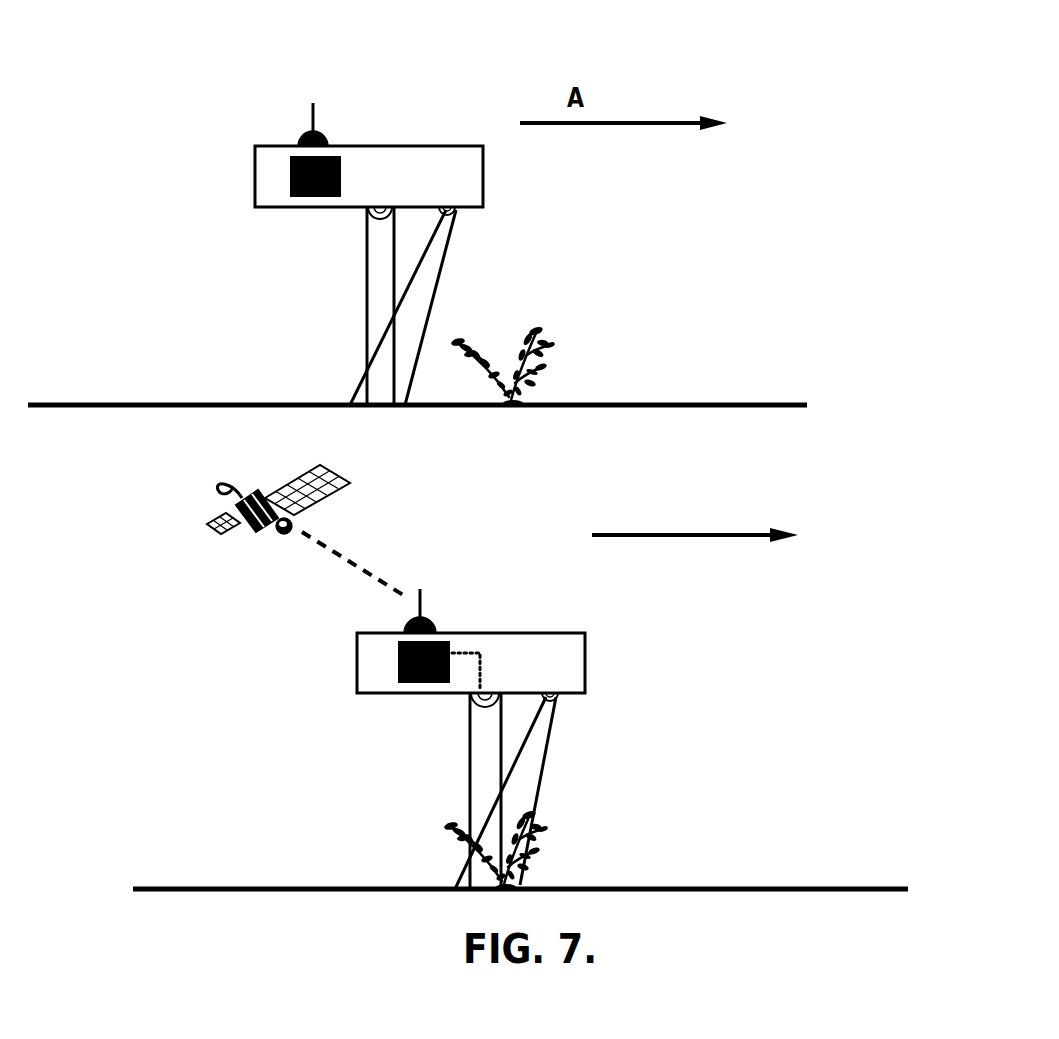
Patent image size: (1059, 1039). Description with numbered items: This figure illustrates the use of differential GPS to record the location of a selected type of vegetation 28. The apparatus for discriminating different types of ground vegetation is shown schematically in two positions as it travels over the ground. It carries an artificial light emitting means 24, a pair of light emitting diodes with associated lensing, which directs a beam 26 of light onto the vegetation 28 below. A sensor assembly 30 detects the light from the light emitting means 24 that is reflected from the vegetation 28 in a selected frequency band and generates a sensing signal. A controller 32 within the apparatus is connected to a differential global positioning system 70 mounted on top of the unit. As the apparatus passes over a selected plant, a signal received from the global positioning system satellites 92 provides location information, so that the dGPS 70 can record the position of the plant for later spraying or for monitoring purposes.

The differential global positioning system 70 is at (295, 135).
The controller 32 is at (290, 172).
The sensor assembly 30 is at (358, 212).
The artificial light emitting means 24 is at (455, 208).
The beam of light 26 is at (418, 301).
The vegetation 28 is at (547, 339).
The global positioning system satellites 92 is at (236, 531).